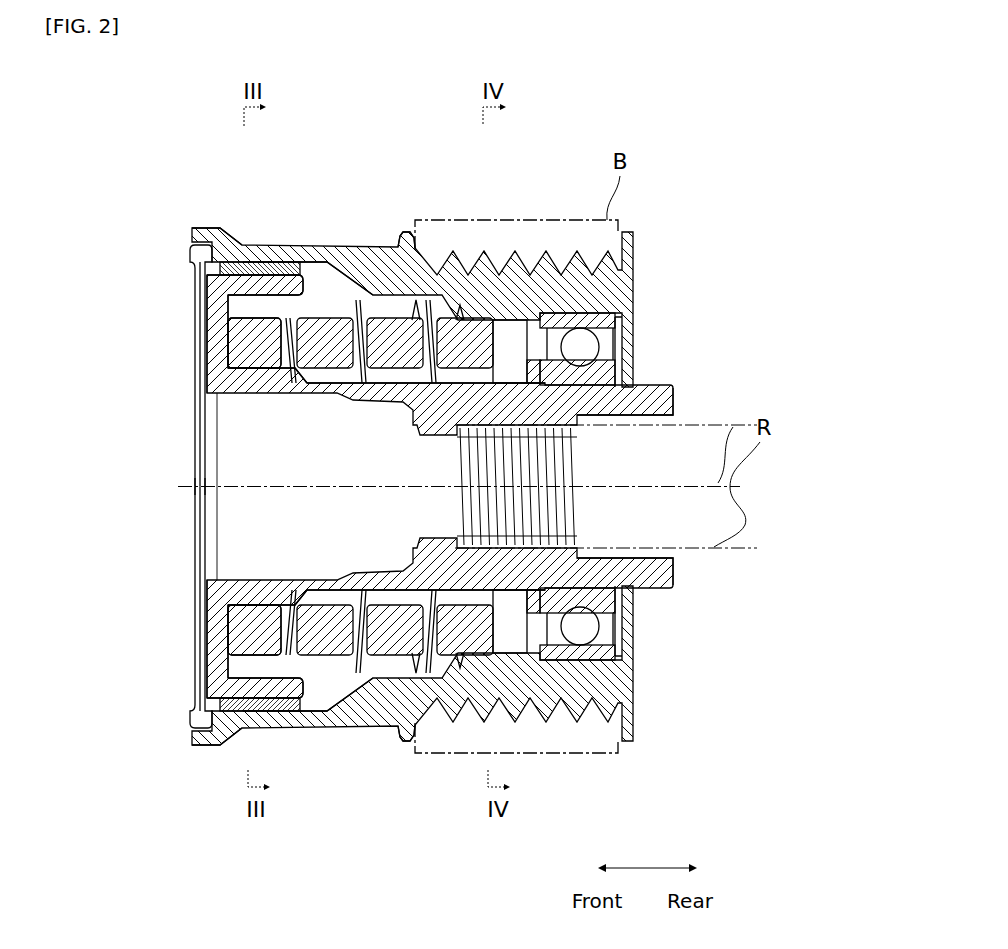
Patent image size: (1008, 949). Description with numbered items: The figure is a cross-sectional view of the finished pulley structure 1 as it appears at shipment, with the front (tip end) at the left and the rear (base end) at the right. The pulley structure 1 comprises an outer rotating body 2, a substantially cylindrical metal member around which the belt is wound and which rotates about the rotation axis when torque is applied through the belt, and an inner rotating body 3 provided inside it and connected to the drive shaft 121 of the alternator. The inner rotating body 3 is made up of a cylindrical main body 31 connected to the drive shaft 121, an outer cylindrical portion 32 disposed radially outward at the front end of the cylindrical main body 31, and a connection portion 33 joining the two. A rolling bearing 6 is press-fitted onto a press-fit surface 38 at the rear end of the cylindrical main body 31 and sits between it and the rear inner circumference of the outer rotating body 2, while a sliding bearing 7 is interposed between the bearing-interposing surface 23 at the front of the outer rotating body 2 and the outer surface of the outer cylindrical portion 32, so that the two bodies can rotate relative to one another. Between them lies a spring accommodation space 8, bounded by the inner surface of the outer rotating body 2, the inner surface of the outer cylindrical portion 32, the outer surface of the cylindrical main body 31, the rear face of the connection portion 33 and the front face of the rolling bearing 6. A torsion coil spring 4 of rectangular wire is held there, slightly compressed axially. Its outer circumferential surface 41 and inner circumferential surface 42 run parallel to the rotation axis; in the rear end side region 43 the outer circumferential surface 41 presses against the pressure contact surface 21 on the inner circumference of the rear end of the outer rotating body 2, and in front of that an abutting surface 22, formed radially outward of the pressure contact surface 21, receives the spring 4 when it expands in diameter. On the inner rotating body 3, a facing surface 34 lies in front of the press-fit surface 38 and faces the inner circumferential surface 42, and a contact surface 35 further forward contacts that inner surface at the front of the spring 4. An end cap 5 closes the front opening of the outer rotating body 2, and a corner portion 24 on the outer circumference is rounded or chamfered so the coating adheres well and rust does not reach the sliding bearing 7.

The pulley structure 1 is at (670, 187).
The outer rotating body 2 is at (633, 262).
The inner rotating body 3 is at (675, 400).
The torsion coil spring 4 is at (232, 338).
The end cap 5 is at (193, 506).
The rolling bearing 6 is at (618, 320).
The sliding bearing 7 is at (265, 262).
The spring accommodation space 8 is at (328, 275).
The pressure contact surface 21 is at (497, 330).
The abutting surface 22 is at (400, 233).
The bearing-interposing surface 23 is at (303, 290).
The corner portion 24 is at (190, 228).
The cylindrical main body 31 is at (606, 400).
The outer cylindrical portion 32 is at (277, 290).
The connection portion 33 is at (212, 310).
The facing surface 34 is at (313, 388).
The contact surface 35 is at (280, 358).
The press-fit surface 38 is at (625, 378).
The outer circumferential surface 41 is at (416, 305).
The inner circumferential surface 42 is at (250, 368).
The rear end side region 43 is at (460, 310).
The drive shaft 121 is at (710, 546).